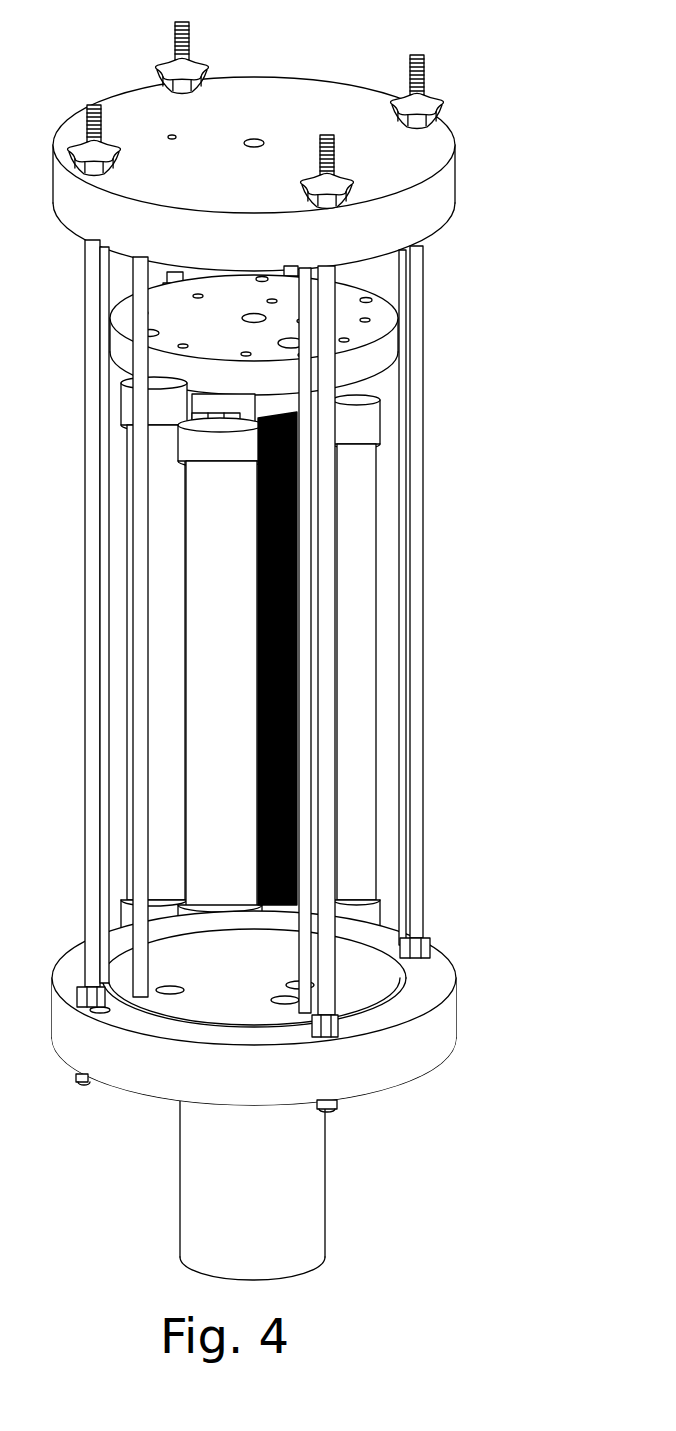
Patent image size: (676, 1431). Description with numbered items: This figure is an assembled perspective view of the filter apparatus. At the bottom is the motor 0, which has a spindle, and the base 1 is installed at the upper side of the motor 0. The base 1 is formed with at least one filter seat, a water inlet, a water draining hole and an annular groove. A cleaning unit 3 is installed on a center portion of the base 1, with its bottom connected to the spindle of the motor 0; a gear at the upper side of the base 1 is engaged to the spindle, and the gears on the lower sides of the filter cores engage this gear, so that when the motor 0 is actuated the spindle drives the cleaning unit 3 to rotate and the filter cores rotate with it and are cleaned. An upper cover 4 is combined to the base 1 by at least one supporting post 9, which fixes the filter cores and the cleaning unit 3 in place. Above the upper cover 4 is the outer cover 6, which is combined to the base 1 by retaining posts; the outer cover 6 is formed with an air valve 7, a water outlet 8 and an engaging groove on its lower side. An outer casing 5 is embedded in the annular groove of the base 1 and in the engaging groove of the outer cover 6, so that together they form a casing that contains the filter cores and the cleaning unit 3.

The motor 0 is at (300, 1178).
The base 1 is at (397, 1050).
The cleaning unit 3 is at (298, 536).
The upper cover 4 is at (378, 357).
The outer casing 5 is at (400, 650).
The outer cover 6 is at (418, 218).
The air valve 7 is at (167, 133).
The water outlet 8 is at (352, 157).
The supporting post 9 is at (415, 786).